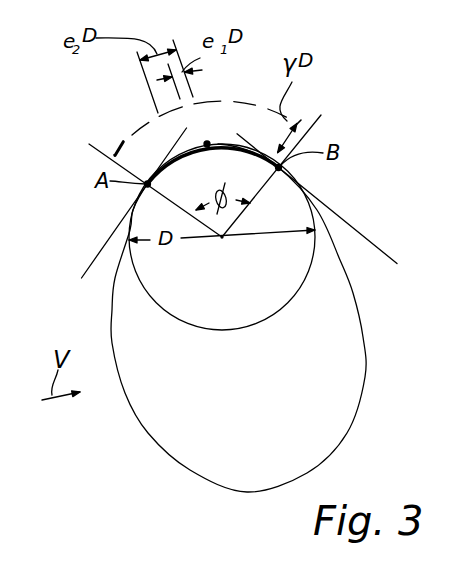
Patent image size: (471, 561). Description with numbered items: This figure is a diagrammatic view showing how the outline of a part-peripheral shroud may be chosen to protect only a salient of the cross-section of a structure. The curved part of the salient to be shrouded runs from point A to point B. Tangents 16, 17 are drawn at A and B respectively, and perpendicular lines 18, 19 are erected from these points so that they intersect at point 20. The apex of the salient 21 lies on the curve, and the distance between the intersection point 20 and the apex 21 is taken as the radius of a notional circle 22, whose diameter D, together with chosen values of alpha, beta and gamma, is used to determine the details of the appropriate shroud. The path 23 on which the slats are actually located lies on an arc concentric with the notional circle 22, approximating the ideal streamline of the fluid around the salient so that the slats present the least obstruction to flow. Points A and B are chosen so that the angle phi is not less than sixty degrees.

The tangent 16 is at (103, 251).
The tangent 17 is at (357, 231).
The perpendicular line 18 is at (170, 194).
The perpendicular line 19 is at (266, 190).
The intersection point 20 is at (222, 237).
The apex of the salient 21 is at (207, 143).
The notional circle 22 is at (253, 328).
The path 23 is at (116, 137).